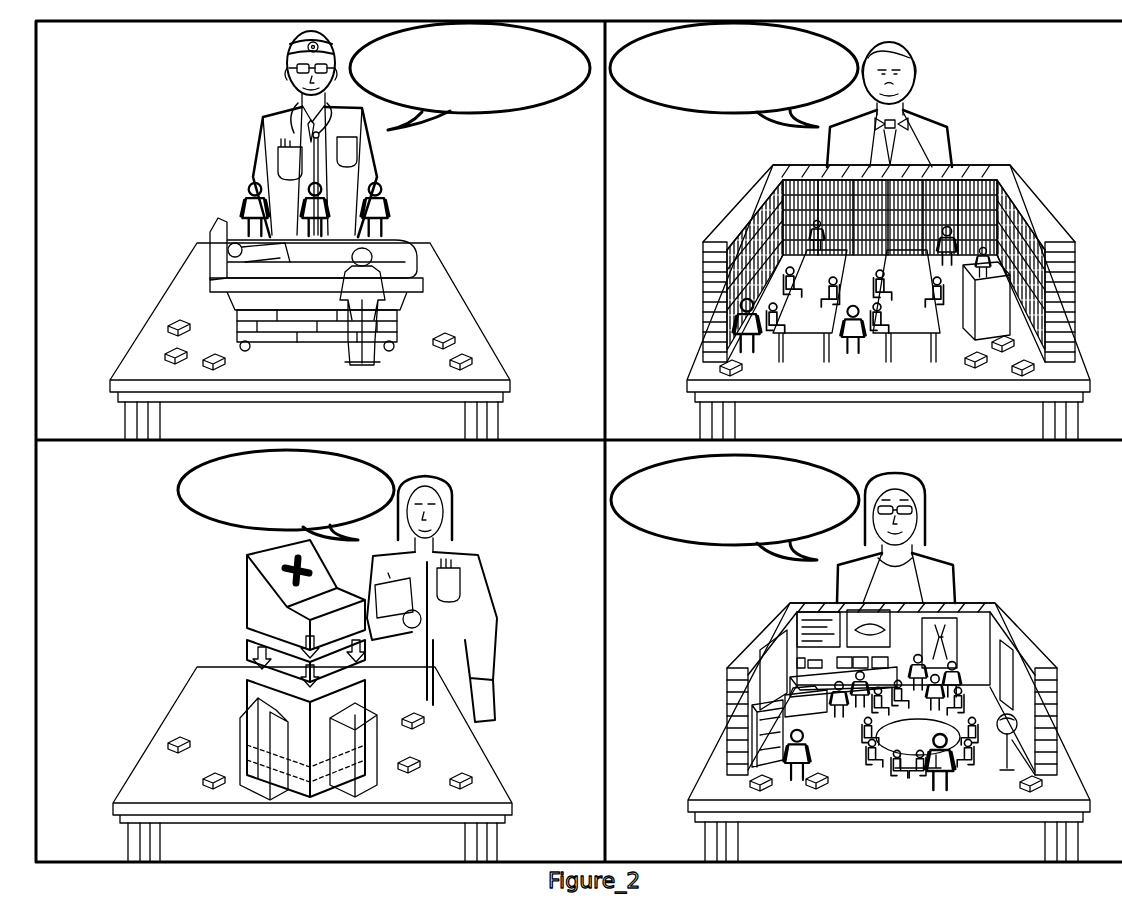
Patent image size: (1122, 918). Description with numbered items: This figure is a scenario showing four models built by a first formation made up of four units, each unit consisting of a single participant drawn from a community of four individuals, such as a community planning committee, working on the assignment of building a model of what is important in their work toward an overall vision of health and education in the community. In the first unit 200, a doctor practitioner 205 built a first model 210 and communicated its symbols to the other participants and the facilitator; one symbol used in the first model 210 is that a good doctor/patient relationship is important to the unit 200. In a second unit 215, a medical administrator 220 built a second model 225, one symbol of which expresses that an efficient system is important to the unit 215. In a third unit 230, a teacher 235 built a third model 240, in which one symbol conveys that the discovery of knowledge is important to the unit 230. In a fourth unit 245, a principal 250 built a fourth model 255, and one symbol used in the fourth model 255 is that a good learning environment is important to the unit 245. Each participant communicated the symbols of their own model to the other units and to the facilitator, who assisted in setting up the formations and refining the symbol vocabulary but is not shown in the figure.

The unit 200 is at (90, 84).
The doctor practitioner 205 is at (267, 95).
The first model 210 is at (425, 213).
The unit 215 is at (105, 581).
The medical administrator 220 is at (456, 512).
The second model 225 is at (216, 623).
The unit 230 is at (1070, 90).
The teacher 235 is at (930, 55).
The third model 240 is at (696, 191).
The unit 245 is at (1068, 548).
The principal 250 is at (930, 503).
The fourth model 255 is at (720, 629).